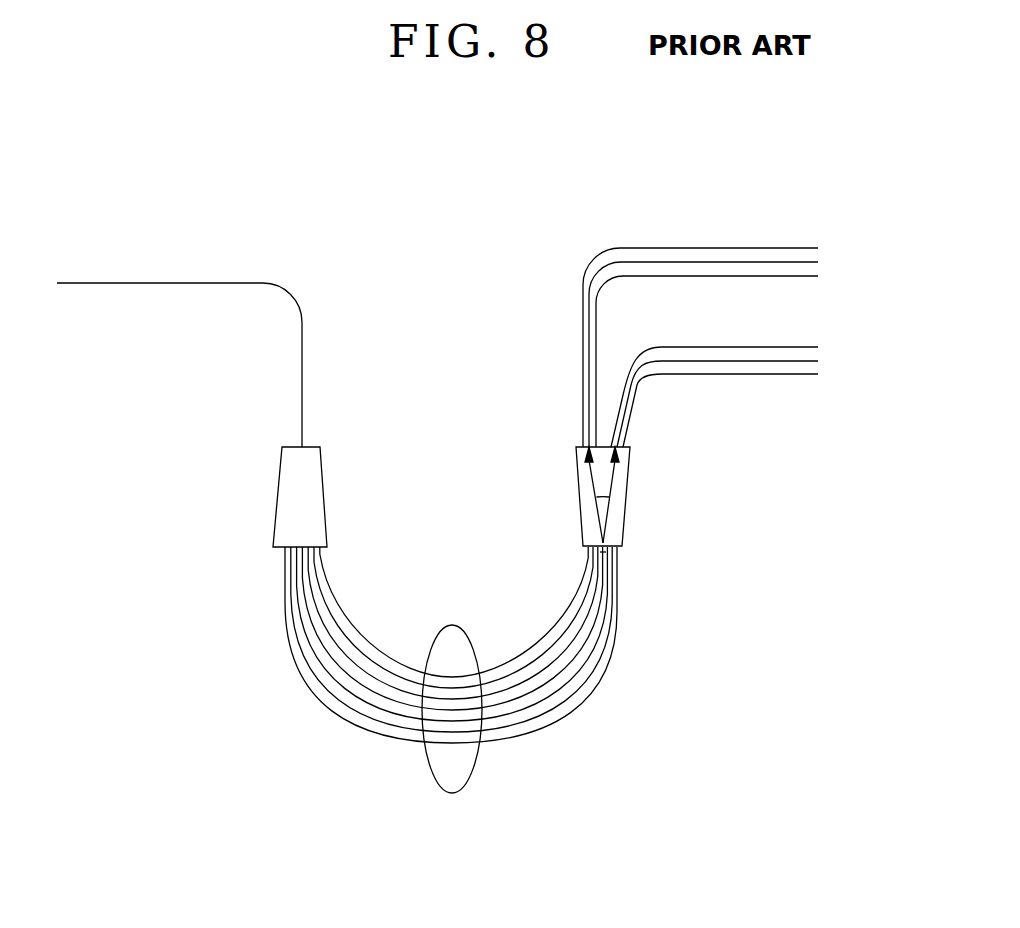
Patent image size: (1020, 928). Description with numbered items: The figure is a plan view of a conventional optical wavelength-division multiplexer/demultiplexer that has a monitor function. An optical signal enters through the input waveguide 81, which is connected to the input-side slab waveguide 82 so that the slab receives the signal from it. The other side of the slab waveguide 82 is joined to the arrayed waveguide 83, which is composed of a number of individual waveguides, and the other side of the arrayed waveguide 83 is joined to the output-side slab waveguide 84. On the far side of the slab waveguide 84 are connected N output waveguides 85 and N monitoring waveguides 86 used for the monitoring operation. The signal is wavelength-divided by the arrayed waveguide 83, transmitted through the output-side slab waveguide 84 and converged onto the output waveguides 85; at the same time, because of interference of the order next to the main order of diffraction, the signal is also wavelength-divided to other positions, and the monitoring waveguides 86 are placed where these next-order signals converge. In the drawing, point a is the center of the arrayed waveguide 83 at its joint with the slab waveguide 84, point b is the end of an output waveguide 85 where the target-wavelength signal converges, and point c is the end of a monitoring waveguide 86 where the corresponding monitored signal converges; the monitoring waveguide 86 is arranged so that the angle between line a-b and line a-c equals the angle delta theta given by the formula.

The input waveguide 81 is at (143, 281).
The input-side slab waveguide 82 is at (277, 502).
The arrayed waveguide 83 is at (470, 782).
The output-side slab waveguide 84 is at (597, 494).
The output waveguides 85 is at (837, 238).
The monitoring waveguides 86 is at (837, 343).
The center point of the arrayed waveguide a is at (605, 551).
The end of the output waveguide b is at (588, 440).
The end of the monitoring waveguide c is at (618, 442).